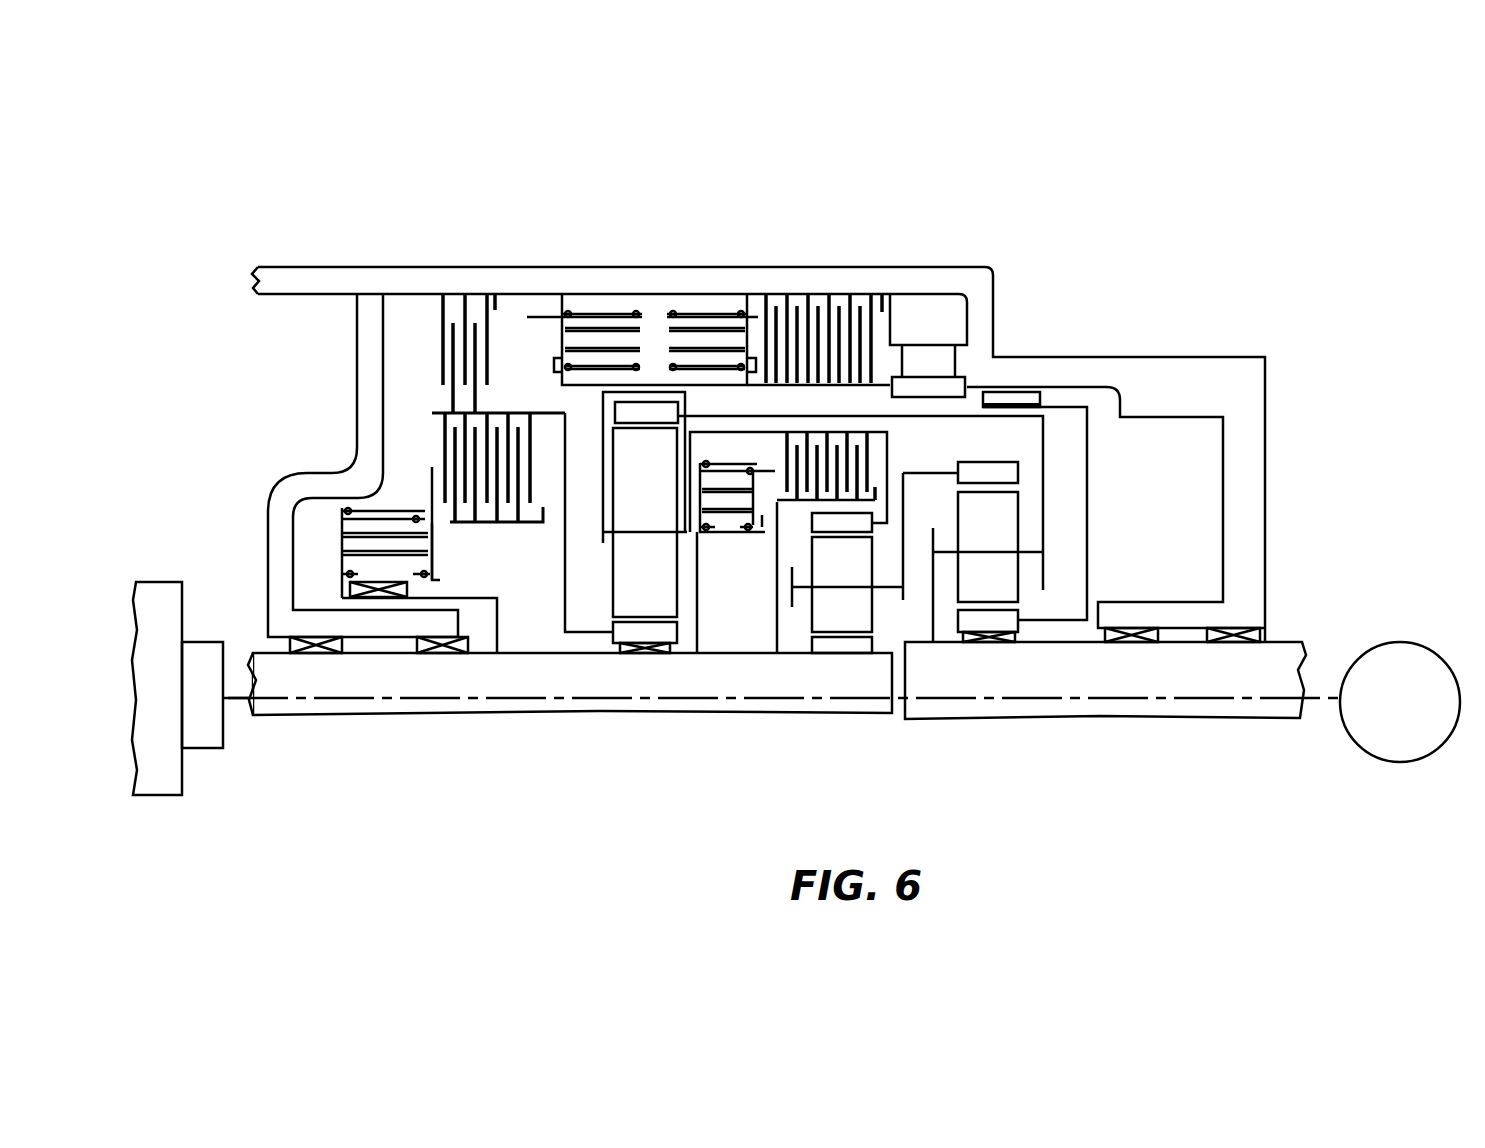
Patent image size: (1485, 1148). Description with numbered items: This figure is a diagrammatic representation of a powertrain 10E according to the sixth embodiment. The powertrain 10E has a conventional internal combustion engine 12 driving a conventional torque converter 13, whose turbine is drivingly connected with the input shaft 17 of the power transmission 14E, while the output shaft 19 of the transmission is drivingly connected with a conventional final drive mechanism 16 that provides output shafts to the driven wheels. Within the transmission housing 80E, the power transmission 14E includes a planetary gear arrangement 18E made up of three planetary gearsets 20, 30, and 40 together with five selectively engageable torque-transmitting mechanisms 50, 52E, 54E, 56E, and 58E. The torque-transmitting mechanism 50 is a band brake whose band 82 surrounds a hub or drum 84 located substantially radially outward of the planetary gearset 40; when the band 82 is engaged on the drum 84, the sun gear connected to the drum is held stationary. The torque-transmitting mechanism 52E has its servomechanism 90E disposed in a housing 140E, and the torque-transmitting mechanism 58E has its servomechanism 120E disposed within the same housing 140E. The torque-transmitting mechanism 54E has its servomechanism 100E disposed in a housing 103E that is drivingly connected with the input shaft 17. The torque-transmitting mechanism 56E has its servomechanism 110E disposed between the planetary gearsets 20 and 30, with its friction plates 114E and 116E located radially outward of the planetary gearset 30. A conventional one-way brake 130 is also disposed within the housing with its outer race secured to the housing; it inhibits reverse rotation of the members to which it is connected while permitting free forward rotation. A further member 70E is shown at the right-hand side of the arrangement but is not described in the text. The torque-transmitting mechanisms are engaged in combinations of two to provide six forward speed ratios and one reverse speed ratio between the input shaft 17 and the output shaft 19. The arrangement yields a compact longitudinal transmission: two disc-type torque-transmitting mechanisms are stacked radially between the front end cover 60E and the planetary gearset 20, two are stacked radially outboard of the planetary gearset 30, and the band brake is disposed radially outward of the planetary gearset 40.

The powertrain 10E is at (316, 185).
The power transmission 14E is at (616, 186).
The internal combustion engine 12 is at (174, 577).
The torque converter 13 is at (229, 636).
The input shaft 17 is at (290, 706).
The output shaft 19 is at (1223, 712).
The final drive mechanism 16 is at (1441, 646).
The front end cover 60E is at (341, 412).
The housing 103E is at (493, 638).
The torque-transmitting mechanism 52E is at (480, 286).
The torque-transmitting mechanism 54E is at (513, 535).
The servomechanism 100E is at (325, 571).
The servomechanism 90E is at (590, 300).
The housing 140E is at (653, 333).
The servomechanism 120E is at (707, 305).
The torque-transmitting mechanism 58E is at (824, 290).
The one-way brake 130 is at (937, 296).
The transmission housing 80E is at (1003, 283).
The interconnecting member 70E is at (1276, 440).
The torque-transmitting mechanism 50 is at (1019, 385).
The band 82 is at (1022, 400).
The hub or drum 84 is at (1088, 498).
The planetary gearset 20 is at (645, 665).
The planetary gear arrangement 18E is at (733, 648).
The torque-transmitting mechanism 56E is at (733, 546).
The servomechanism 110E is at (747, 456).
The friction plates 114E is at (790, 450).
The friction plates 116E is at (822, 465).
The planetary gearset 30 is at (843, 665).
The planetary gearset 40 is at (987, 654).